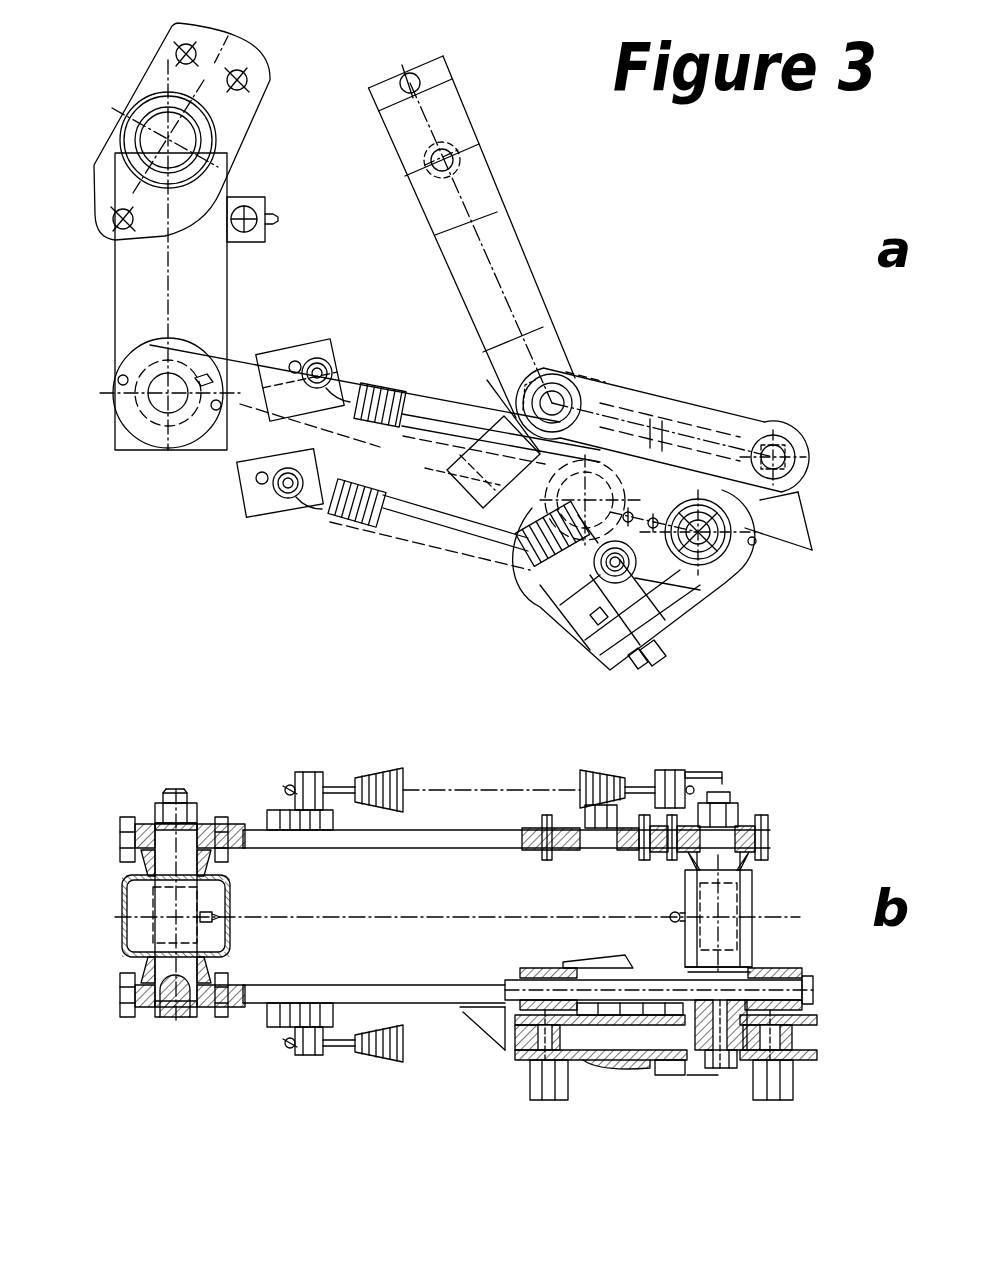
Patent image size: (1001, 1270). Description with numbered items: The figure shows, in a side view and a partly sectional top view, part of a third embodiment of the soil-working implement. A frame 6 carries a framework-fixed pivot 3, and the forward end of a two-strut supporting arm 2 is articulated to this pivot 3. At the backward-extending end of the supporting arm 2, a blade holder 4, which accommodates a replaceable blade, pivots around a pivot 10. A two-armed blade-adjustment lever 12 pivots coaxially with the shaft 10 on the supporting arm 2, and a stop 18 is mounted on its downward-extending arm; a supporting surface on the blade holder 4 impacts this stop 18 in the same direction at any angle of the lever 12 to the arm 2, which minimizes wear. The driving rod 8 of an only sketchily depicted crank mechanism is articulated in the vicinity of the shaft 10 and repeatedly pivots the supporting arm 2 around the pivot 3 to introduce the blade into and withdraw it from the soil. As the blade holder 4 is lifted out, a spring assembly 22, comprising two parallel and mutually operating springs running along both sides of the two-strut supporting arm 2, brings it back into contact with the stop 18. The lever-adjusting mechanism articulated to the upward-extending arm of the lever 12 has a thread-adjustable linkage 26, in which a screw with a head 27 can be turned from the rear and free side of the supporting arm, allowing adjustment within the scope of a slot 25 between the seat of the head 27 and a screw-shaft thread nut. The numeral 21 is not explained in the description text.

In FIG. 3b, the supporting arm 2 is at (410, 838).
In FIG. 3b, the pivot 3 is at (172, 852).
In FIG. 3a, the blade holder 4 is at (667, 590).
In FIG. 3b, the frame 6 is at (228, 892).
In FIG. 3a, the driving rod 8 is at (500, 242).
In FIG. 3a, the pivot 10 is at (733, 565).
In FIG. 3a, the blade-adjustment lever 12 is at (752, 535).
In FIG. 3a, the stop 18 is at (532, 612).
In FIG. 3b, the spring 21 is at (378, 766).
In FIG. 3a, the spring assembly 22 is at (380, 432).
In FIG. 3b, the spring assembly 22 is at (378, 1062).
In FIG. 3a, the slot 25 is at (713, 430).
In FIG. 3a, the thread-adjustable linkage 26 is at (617, 388).
In FIG. 3b, the thread-adjustable linkage 26 is at (637, 1062).
In FIG. 3a, the head 27 is at (817, 462).